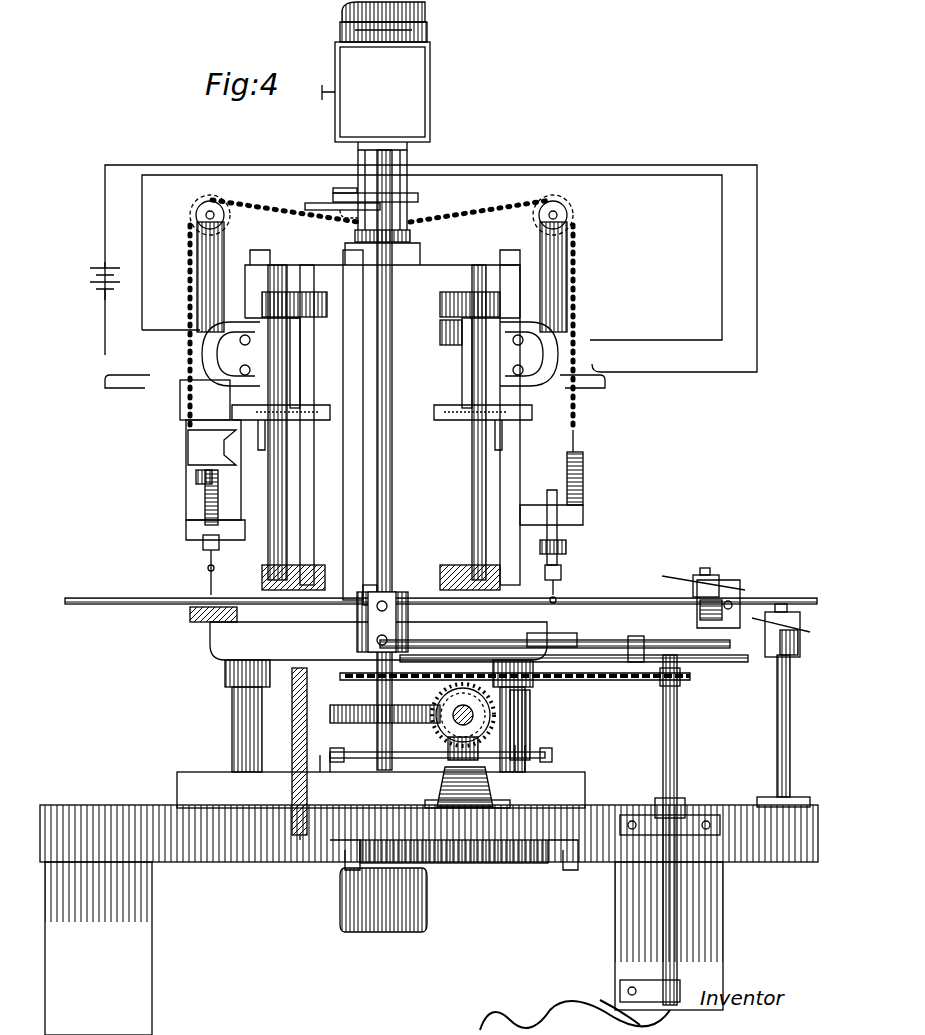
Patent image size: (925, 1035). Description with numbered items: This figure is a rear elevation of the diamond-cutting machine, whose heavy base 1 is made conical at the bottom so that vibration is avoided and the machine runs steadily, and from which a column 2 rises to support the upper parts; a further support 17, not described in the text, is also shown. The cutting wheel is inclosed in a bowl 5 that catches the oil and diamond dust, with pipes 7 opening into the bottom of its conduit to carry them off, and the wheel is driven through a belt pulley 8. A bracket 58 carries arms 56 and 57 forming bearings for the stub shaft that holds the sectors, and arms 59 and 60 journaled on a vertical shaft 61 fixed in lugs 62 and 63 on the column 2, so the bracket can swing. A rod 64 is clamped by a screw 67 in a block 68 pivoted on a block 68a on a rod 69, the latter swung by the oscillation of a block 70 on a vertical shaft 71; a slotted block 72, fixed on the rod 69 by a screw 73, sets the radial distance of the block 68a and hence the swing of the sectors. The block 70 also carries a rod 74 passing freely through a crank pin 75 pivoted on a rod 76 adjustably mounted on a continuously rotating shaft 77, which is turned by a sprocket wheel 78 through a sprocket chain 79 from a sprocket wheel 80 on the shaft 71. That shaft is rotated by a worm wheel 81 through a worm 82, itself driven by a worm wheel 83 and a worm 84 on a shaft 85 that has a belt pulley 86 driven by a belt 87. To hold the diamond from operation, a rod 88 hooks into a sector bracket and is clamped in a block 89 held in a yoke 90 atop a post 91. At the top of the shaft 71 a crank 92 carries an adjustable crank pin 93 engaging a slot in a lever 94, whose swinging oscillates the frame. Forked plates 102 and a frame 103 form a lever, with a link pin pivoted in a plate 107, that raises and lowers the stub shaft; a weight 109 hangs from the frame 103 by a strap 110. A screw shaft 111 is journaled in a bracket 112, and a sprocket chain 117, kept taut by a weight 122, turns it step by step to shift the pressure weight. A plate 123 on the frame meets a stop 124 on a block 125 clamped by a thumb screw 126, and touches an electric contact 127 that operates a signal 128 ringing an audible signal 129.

The base 1 is at (240, 770).
The column 2 is at (435, 445).
The bowl 5 is at (225, 640).
The pipes 7 is at (530, 700).
The belt pulley 8 is at (427, 900).
The column 17 is at (232, 725).
The arm 56 is at (150, 385).
The arm 57 is at (195, 540).
The bracket 58 is at (302, 510).
The arm 59 is at (452, 345).
The arm 60 is at (440, 580).
The vertical shaft 61 is at (287, 545).
The lug 62 is at (435, 290).
The lug 63 is at (390, 580).
The rod 64 is at (735, 588).
The screw 67 is at (705, 568).
The block 68 is at (715, 575).
The block 68a is at (700, 608).
The rod 69 is at (110, 604).
The block 70 is at (357, 620).
The vertical shaft 71 is at (392, 505).
The block 72 is at (740, 595).
The screw 73 is at (730, 610).
The rod 74 is at (590, 640).
The crank pin 75 is at (636, 636).
The rod 76 is at (725, 662).
The shaft 77 is at (677, 740).
The sprocket wheel 78 is at (680, 680).
The sprocket chain 79 is at (620, 680).
The sprocket wheel 80 is at (380, 688).
The worm wheel 81 is at (440, 695).
The worm 82 is at (473, 715).
The worm wheel 83 is at (455, 730).
The worm 84 is at (450, 780).
The shaft 85 is at (360, 752).
The belt pulley 86 is at (292, 780).
The belt 87 is at (300, 840).
The rod 88 is at (800, 640).
The block 89 is at (788, 620).
The yoke 90 is at (798, 650).
The post 91 is at (790, 720).
The crank 92 is at (305, 207).
The crank pin 93 is at (345, 188).
The lever 94 is at (333, 197).
The forked plates 102 is at (188, 460).
The frame 103 is at (190, 410).
The plate 107 is at (186, 490).
The weight 109 is at (190, 612).
The strap 110 is at (203, 545).
The screw shaft 111 is at (200, 223).
The bracket 112 is at (218, 250).
The sprocket chain 117 is at (270, 195).
The weight 122 is at (205, 505).
The plate 123 is at (196, 477).
The stop 124 is at (300, 420).
The block 125 is at (300, 360).
The thumb screw 126 is at (295, 320).
The electric contact 127 is at (210, 350).
The signal 128 is at (430, 86).
The audible signal 129 is at (427, 14).